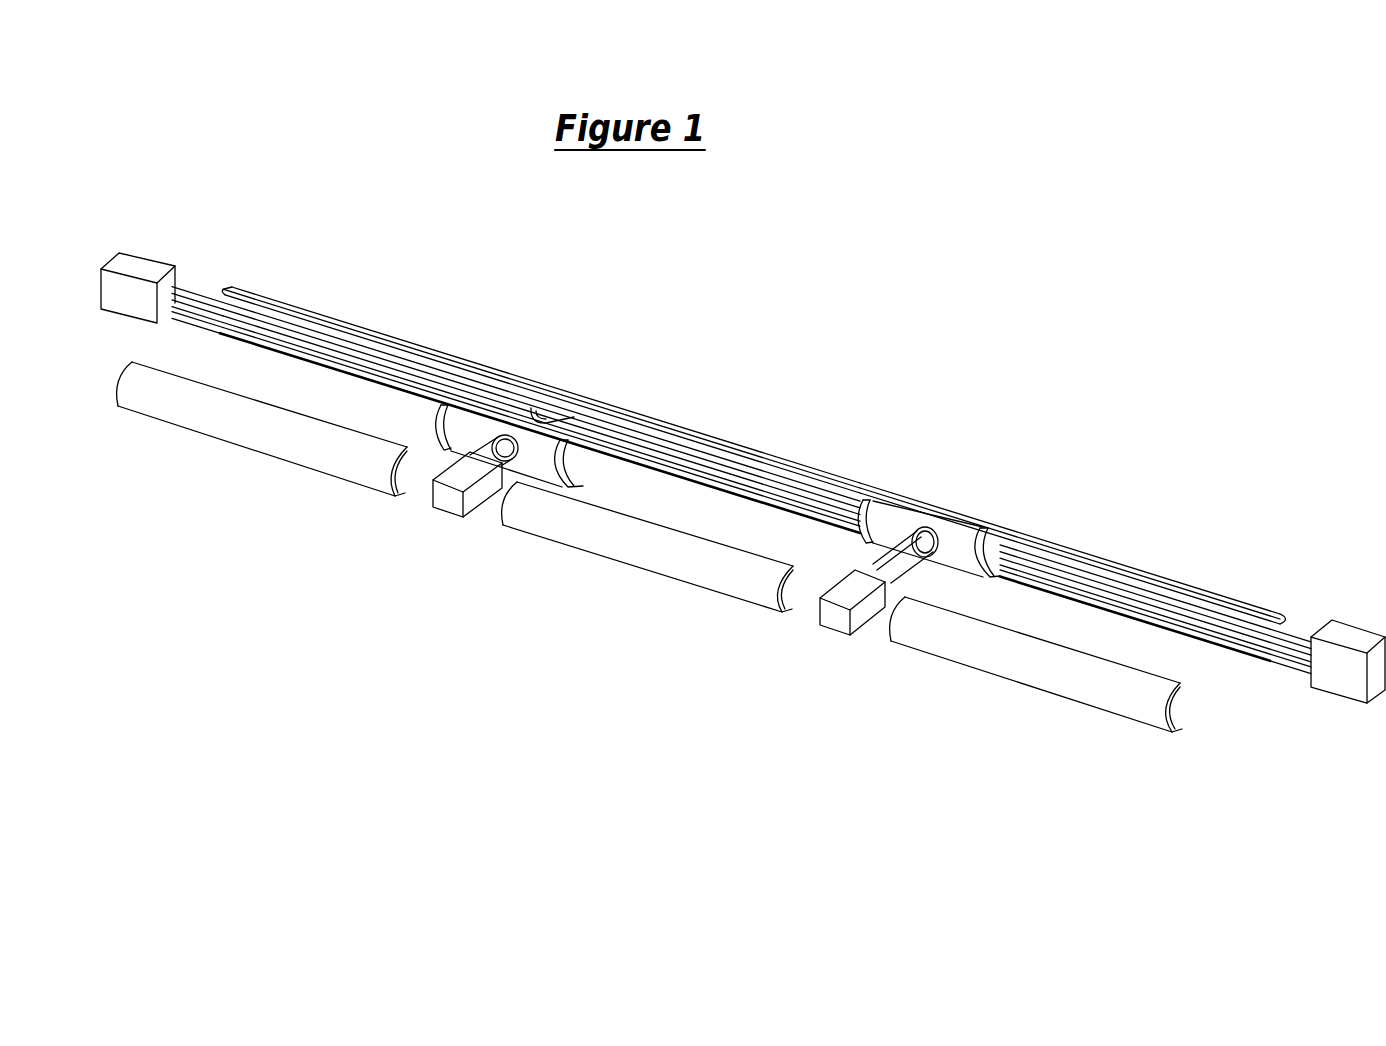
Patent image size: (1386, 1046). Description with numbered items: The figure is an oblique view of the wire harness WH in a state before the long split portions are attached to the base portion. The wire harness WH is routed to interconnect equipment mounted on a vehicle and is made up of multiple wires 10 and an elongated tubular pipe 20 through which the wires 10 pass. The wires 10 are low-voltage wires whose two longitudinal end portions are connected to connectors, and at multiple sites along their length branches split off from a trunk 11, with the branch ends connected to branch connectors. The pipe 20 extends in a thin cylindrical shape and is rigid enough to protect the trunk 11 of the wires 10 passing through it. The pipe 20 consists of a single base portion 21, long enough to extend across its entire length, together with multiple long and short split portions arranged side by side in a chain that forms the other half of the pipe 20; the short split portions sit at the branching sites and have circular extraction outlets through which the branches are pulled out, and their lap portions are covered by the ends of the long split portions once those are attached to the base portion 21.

The wire harness WH is at (765, 377).
The wire 10 is at (197, 296).
The trunk 11 is at (797, 481).
The pipe 20 is at (290, 307).
The base portion 21 is at (1166, 578).